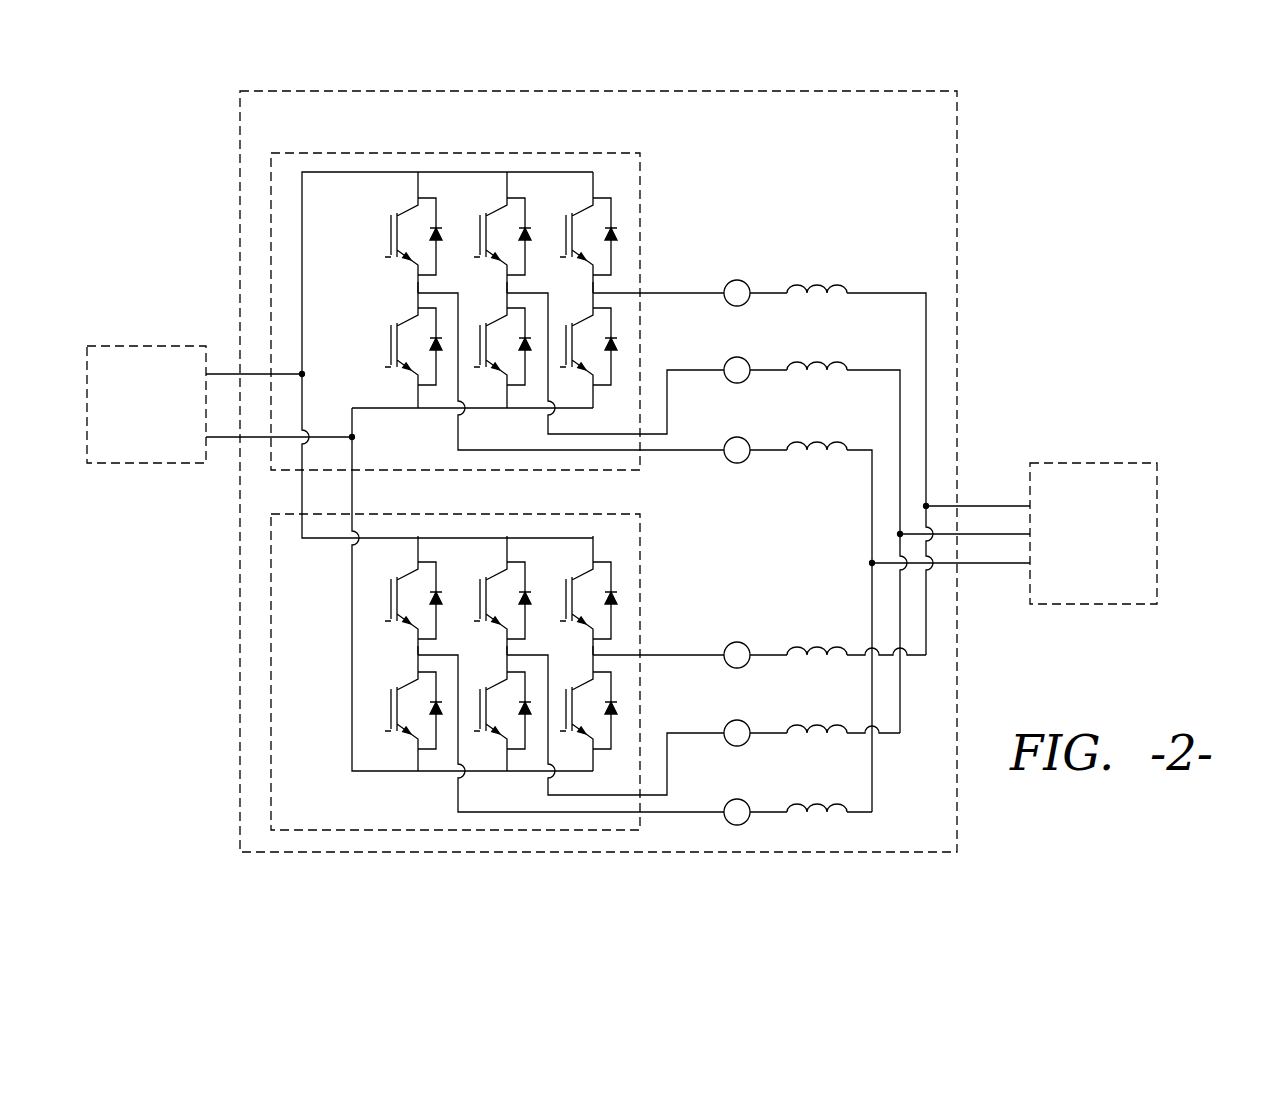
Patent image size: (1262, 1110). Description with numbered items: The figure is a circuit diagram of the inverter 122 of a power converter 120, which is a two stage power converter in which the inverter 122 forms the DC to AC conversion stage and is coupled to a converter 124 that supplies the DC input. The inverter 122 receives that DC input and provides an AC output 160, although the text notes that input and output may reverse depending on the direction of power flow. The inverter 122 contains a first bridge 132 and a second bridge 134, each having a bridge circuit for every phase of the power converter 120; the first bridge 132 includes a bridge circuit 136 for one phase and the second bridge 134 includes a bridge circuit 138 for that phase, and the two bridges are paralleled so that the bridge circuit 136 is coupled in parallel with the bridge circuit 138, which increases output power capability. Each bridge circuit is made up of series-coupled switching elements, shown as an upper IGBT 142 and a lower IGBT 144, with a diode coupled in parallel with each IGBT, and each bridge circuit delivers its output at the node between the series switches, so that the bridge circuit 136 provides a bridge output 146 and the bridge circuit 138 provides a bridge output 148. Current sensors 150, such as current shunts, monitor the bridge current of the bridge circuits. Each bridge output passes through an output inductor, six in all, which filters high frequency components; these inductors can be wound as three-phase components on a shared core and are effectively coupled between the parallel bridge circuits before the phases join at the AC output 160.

The power converter 120 is at (1013, 170).
The inverter 122 is at (556, 91).
The converter 124 is at (131, 346).
The first bridge 132 is at (271, 230).
The second bridge 134 is at (271, 686).
The bridge circuit 136 is at (418, 187).
The bridge circuit 138 is at (418, 548).
The upper IGBT 142 is at (389, 242).
The lower IGBT 144 is at (389, 354).
The bridge output 146 is at (670, 455).
The bridge output 148 is at (657, 813).
The current sensors 150 is at (728, 284).
The AC output 160 is at (1080, 463).